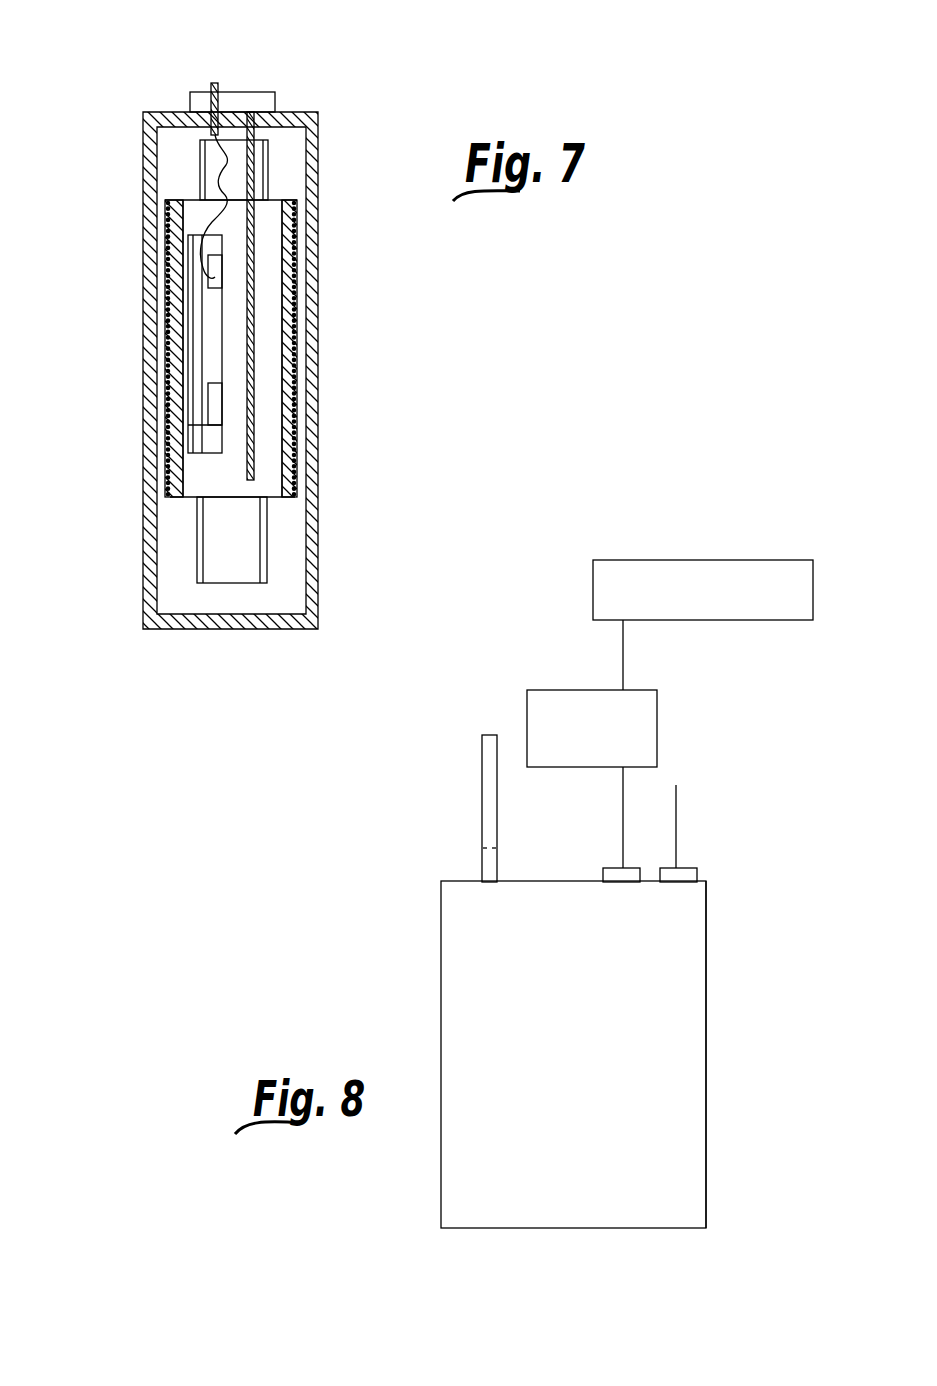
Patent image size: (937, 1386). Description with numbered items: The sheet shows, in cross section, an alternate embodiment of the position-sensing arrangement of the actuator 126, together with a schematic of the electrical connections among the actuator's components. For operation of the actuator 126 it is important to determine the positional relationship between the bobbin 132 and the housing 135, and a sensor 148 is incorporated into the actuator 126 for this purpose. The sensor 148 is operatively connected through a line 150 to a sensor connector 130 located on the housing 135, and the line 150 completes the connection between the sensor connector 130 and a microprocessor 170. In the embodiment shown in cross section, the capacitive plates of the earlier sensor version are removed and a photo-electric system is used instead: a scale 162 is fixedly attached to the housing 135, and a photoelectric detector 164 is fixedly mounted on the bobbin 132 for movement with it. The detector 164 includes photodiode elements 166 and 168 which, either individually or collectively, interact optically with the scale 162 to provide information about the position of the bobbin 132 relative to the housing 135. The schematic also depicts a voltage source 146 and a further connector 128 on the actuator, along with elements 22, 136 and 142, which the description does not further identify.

In FIG. 8, the electrode 22 is at (482, 762).
In FIG. 8, the actuator 126 is at (672, 985).
In FIG. 8, the connector 128 is at (610, 868).
In FIG. 7, the sensor connector 130 is at (276, 100).
In FIG. 8, the sensor connector 130 is at (690, 868).
In FIG. 7, the bobbin 132 is at (200, 477).
In FIG. 8, the housing 135 is at (673, 1118).
In FIG. 7, the base member 136 is at (213, 562).
In FIG. 7, the insulating sleeve 142 is at (224, 338).
In FIG. 8, the voltage source 146 is at (657, 697).
In FIG. 8, the sensor 148 is at (442, 972).
In FIG. 7, the line 150 is at (212, 83).
In FIG. 8, the line 150 is at (677, 802).
In FIG. 7, the scale 162 is at (255, 296).
In FIG. 7, the photoelectric detector 164 is at (168, 214).
In FIG. 7, the photodiode element 166 is at (210, 283).
In FIG. 7, the photodiode element 168 is at (213, 410).
In FIG. 8, the microprocessor 170 is at (690, 560).